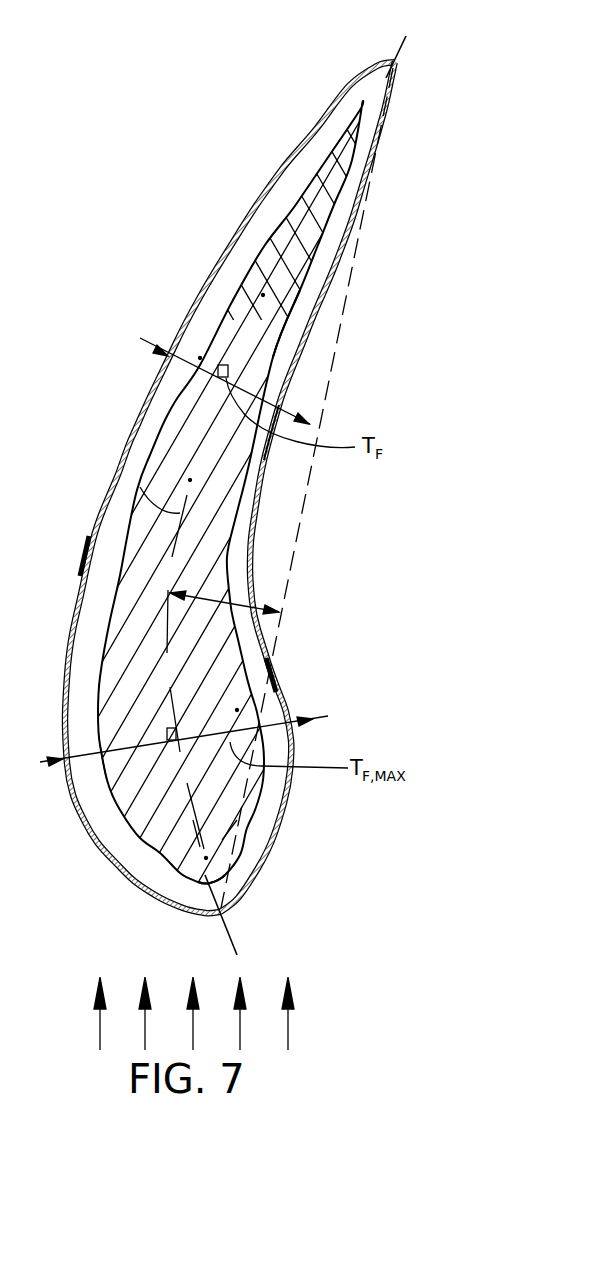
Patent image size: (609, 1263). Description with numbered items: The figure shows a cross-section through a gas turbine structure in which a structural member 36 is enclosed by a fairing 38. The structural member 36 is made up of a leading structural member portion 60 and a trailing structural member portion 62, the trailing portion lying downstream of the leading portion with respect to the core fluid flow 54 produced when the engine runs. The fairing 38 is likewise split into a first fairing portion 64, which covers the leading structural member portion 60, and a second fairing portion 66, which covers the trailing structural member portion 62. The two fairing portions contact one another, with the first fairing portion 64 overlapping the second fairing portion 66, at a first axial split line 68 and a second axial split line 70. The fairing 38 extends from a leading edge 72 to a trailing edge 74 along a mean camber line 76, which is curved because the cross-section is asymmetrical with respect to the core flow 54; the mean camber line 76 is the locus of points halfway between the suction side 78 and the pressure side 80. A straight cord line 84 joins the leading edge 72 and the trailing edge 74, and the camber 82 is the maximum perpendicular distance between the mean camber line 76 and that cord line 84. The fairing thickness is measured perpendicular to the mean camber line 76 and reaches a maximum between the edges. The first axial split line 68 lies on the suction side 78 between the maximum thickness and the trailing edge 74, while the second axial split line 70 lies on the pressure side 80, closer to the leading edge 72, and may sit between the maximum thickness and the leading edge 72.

The structural member 36 is at (124, 855).
The fairing 38 is at (300, 824).
The core fluid flow 54 is at (181, 1038).
The leading structural member portion 60 is at (196, 902).
The trailing structural member portion 62 is at (361, 92).
The first fairing portion 64 is at (87, 830).
The second fairing portion 66 is at (327, 348).
The first axial split line 68 is at (65, 528).
The second axial split line 70 is at (310, 662).
The leading edge 72 is at (247, 917).
The trailing edge 74 is at (377, 38).
The mean camber line 76 is at (140, 487).
The suction side 78 is at (84, 322).
The pressure side 80 is at (271, 520).
The camber 82 is at (238, 597).
The cord line 84 is at (308, 489).